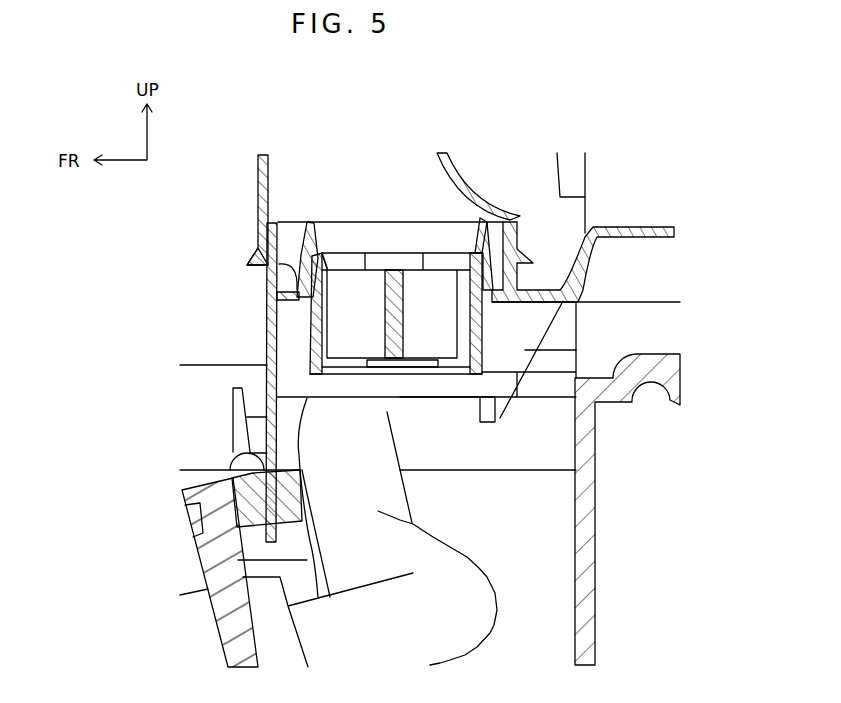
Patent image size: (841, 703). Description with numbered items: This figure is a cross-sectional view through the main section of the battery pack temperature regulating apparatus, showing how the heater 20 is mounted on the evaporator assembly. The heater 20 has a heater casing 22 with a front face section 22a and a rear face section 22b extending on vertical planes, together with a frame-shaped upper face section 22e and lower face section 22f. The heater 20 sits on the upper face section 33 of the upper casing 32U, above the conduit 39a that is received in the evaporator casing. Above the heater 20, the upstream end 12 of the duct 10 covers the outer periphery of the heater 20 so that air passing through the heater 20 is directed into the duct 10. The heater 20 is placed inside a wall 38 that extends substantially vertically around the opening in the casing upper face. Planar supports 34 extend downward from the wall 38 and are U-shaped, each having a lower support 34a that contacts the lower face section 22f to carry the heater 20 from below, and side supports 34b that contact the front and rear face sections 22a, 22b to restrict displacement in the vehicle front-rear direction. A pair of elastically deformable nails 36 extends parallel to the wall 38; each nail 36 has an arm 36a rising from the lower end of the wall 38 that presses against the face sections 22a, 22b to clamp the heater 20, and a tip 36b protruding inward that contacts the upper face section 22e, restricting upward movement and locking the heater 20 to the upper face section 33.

The duct 10 is at (249, 190).
The upstream end 12 is at (239, 263).
The heater 20 is at (423, 319).
The heater casing 22 is at (423, 323).
The front face section 22a is at (306, 332).
The rear face section 22b is at (487, 322).
The upper face section 22e is at (323, 252).
The lower face section 22f is at (318, 376).
The upper casing 32U is at (256, 405).
The upper face section 33 is at (378, 193).
The support 34 is at (413, 409).
The lower support 34a is at (463, 392).
The side support 34b is at (293, 353).
The nail 36 is at (438, 342).
The arm 36a is at (267, 268).
The tip 36b is at (309, 228).
The wall 38 is at (256, 297).
The conduit 39a is at (490, 578).